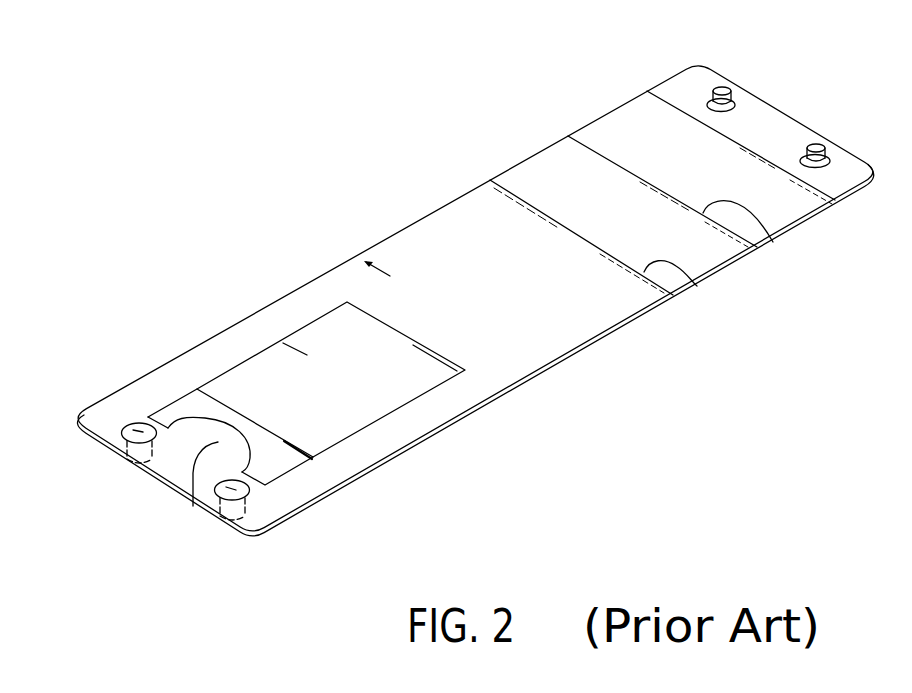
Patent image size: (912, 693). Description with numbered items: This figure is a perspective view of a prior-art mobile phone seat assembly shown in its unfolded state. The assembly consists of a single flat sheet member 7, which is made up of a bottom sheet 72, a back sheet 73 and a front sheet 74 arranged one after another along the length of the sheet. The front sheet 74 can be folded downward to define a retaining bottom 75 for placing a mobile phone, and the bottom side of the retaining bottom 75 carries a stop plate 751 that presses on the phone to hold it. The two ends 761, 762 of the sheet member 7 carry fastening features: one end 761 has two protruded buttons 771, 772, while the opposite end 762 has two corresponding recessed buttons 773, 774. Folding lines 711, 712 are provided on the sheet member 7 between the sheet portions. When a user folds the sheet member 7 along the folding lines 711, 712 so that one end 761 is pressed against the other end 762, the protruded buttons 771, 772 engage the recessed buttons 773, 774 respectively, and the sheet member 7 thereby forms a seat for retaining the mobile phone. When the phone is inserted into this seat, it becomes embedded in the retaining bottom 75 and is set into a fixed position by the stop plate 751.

The sheet member 7 is at (298, 274).
The bottom sheet 72 is at (628, 133).
The back sheet 73 is at (547, 177).
The front sheet 74 is at (453, 230).
The retaining bottom 75 is at (378, 422).
The folding line 711 is at (773, 242).
The folding line 712 is at (697, 286).
The stop plate 751 is at (218, 442).
The end of the sheet member 761 is at (767, 127).
The end of the sheet member 762 is at (158, 468).
The protruded button 771 is at (724, 86).
The protruded button 772 is at (818, 146).
The recessed button 773 is at (236, 490).
The recessed button 774 is at (118, 428).